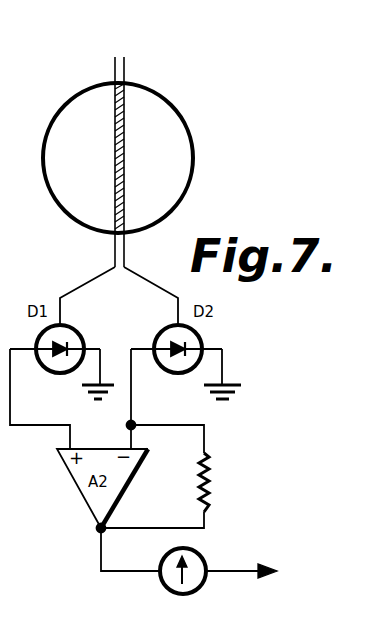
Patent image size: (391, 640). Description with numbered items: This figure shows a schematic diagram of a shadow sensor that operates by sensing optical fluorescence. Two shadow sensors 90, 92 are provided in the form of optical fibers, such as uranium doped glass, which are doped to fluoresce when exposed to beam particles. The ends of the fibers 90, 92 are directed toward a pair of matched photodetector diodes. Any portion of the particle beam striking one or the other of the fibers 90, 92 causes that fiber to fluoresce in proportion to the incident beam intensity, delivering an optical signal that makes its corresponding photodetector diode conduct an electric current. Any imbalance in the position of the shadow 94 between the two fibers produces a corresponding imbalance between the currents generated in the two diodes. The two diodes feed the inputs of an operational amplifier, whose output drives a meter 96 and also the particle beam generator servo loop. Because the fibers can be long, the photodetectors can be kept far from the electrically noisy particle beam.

The shadow sensor optical fiber 90 is at (113, 68).
The shadow sensor optical fiber 92 is at (124, 72).
The shadow 94 is at (124, 130).
The meter 96 is at (202, 553).